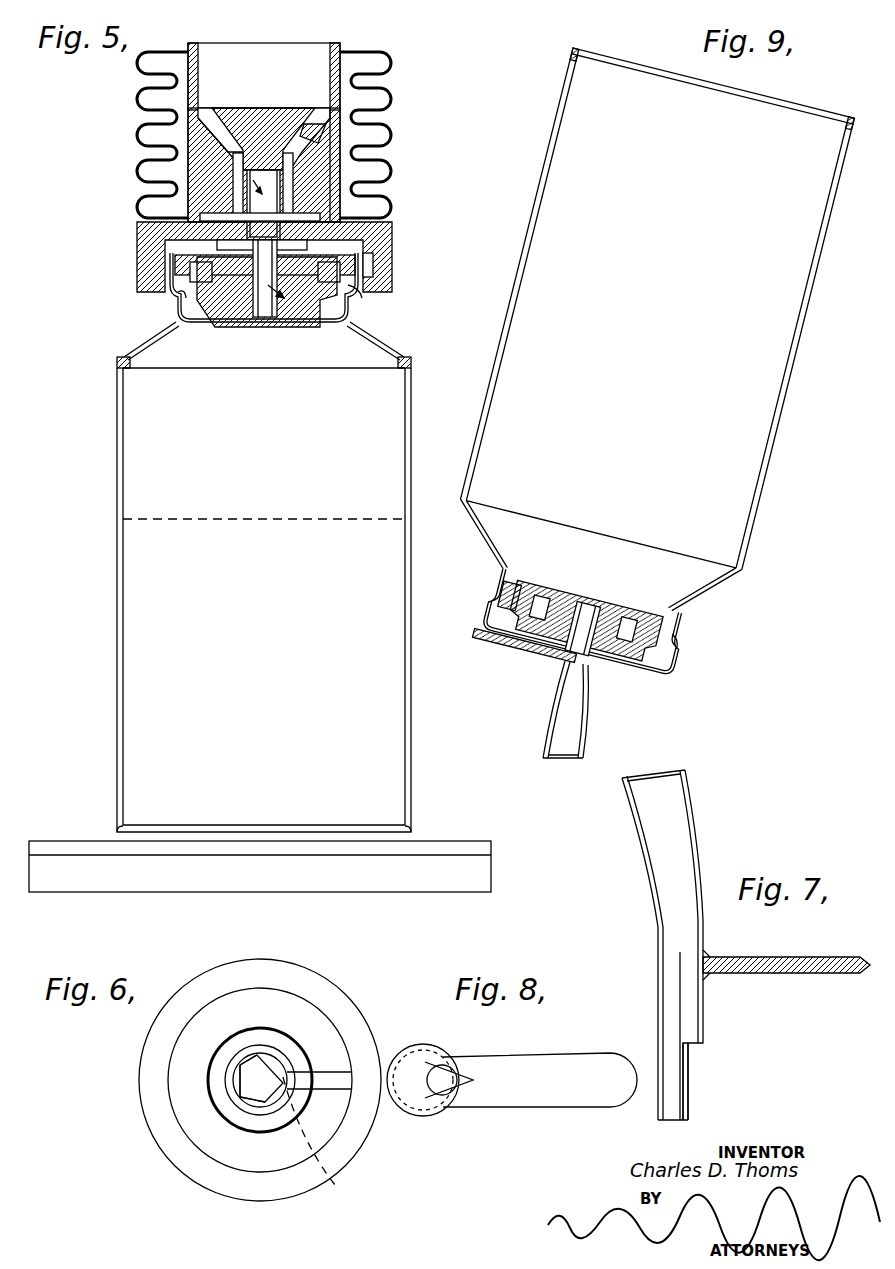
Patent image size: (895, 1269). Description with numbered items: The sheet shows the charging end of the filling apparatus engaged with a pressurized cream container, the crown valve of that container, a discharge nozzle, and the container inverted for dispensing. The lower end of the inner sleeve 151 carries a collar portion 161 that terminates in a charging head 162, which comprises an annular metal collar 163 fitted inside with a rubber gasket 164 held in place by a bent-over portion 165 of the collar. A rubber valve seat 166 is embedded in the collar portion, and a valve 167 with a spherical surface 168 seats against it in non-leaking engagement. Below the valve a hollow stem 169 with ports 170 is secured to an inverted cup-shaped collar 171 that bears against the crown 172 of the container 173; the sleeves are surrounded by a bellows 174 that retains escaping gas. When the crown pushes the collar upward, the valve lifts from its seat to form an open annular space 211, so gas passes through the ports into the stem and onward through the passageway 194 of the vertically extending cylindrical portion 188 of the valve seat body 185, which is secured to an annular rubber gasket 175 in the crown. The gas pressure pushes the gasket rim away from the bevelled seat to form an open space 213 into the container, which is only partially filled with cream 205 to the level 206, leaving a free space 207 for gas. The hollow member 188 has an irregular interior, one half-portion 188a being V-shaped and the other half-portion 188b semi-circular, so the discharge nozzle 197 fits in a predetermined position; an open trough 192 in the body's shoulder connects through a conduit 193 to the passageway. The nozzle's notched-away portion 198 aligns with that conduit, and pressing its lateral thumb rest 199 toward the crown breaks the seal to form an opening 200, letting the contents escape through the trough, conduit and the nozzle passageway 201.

In FIG. 5, the inner sleeve 151 is at (333, 52).
In FIG. 5, the open annular space 211 is at (328, 128).
In FIG. 5, the bellows 174 is at (137, 97).
In FIG. 5, the spherical surface 168 is at (208, 117).
In FIG. 5, the valve 167 is at (275, 120).
In FIG. 5, the rubber valve seat 166 is at (322, 130).
In FIG. 5, the ports 170 is at (245, 176).
In FIG. 5, the collar portion 161 is at (312, 178).
In FIG. 5, the inverted cup-shaped collar 171 is at (200, 218).
In FIG. 5, the hollow stem 169 is at (289, 207).
In FIG. 5, the charging head 162 is at (395, 250).
In FIG. 5, the crown 172 is at (168, 260).
In FIG. 9, the crown 172 is at (673, 653).
In FIG. 5, the annular metal collar 163 is at (393, 278).
In FIG. 5, the rubber gasket 164 is at (372, 272).
In FIG. 5, the bent-over portion 165 is at (372, 298).
In FIG. 5, the annular rubber gasket 175 is at (180, 298).
In FIG. 9, the annular rubber gasket 175 is at (675, 622).
In FIG. 5, the valve seat body 185 is at (242, 325).
In FIG. 9, the valve seat body 185 is at (628, 593).
In FIG. 6, the valve seat body 185 is at (213, 1192).
In FIG. 5, the open space 213 is at (330, 310).
In FIG. 5, the free space 207 is at (138, 417).
In FIG. 5, the container 173 is at (118, 471).
In FIG. 9, the container 173 is at (747, 557).
In FIG. 5, the level 206 is at (182, 521).
In FIG. 5, the cream 205 is at (138, 597).
In FIG. 9, the notched-away portion 198 is at (583, 585).
In FIG. 7, the notched-away portion 198 is at (695, 1058).
In FIG. 8, the notched-away portion 198 is at (468, 1088).
In FIG. 9, the opening 200 is at (522, 582).
In FIG. 9, the thumb rest 199 is at (537, 660).
In FIG. 7, the thumb rest 199 is at (783, 973).
In FIG. 8, the thumb rest 199 is at (557, 1092).
In FIG. 9, the discharge nozzle 197 is at (580, 705).
In FIG. 7, the discharge nozzle 197 is at (652, 882).
In FIG. 8, the discharge nozzle 197 is at (423, 1117).
In FIG. 7, the passageway 201 is at (677, 937).
In FIG. 6, the passageway 194 is at (248, 1060).
In FIG. 6, the vertically extending cylindrical portion 188 is at (272, 1053).
In FIG. 6, the open trough 192 is at (323, 1070).
In FIG. 6, the semi-circular half-portion 188b is at (237, 1075).
In FIG. 6, the V-shaped half-portion 188a is at (240, 1097).
In FIG. 6, the conduit 193 is at (328, 1140).